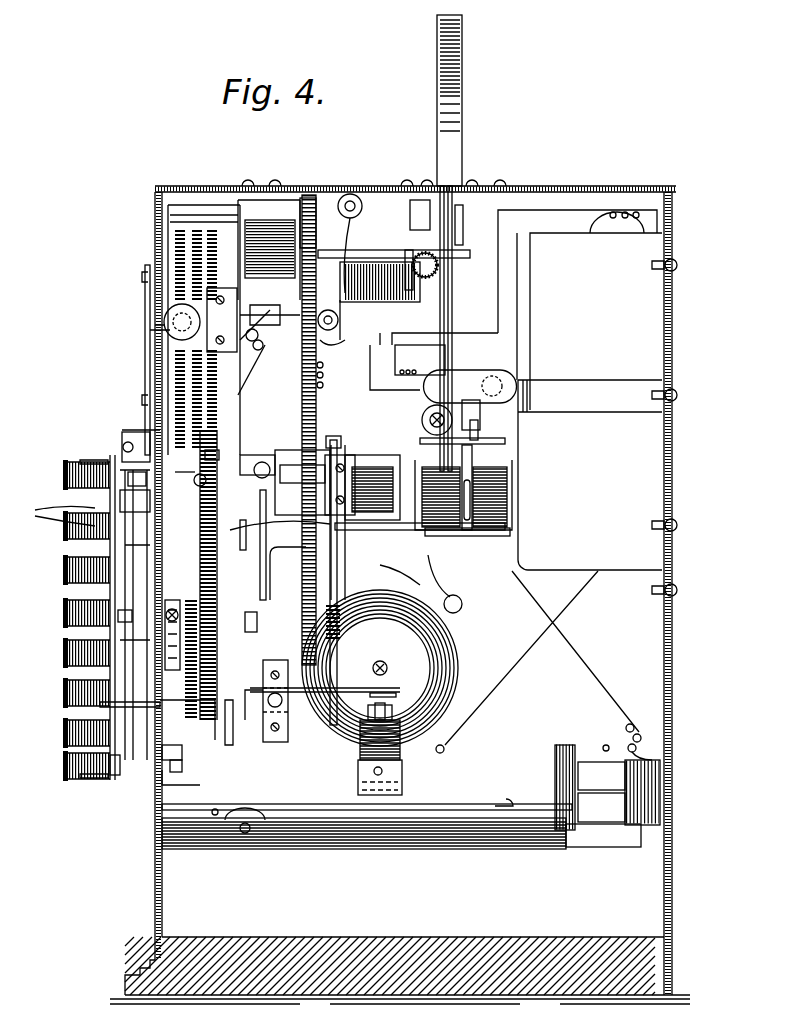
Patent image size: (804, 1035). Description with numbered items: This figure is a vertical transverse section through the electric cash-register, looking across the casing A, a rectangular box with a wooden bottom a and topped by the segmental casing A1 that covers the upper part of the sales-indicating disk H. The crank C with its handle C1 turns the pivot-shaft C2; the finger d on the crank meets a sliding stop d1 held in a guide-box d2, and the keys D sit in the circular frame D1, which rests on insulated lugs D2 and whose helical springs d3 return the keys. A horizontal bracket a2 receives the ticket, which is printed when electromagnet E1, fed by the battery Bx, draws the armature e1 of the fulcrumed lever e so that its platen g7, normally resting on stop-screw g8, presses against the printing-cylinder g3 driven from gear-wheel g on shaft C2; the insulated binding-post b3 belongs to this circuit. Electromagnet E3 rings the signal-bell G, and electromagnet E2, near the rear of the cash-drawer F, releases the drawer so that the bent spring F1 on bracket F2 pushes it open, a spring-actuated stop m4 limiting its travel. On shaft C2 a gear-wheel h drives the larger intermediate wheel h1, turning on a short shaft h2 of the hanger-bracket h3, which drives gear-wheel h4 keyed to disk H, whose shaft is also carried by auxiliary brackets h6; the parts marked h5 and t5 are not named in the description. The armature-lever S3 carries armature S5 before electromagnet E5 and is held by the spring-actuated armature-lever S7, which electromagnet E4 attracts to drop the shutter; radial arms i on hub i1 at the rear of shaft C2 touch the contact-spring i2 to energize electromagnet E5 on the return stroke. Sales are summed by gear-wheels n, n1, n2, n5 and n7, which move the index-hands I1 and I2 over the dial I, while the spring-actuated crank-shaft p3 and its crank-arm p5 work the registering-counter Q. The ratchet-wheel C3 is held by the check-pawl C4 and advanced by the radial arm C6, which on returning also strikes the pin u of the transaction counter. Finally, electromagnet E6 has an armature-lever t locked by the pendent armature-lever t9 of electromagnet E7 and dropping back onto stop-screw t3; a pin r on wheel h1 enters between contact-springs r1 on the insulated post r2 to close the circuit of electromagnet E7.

The exterior casing A is at (340, 178).
The bottom a is at (400, 970).
The segmental casing A1 is at (462, 92).
The electric battery Bx is at (527, 390).
The spring-actuated armature-lever S7 is at (505, 460).
The signal-bell G is at (380, 668).
The electromagnet E1 is at (402, 768).
The armature-lever e is at (218, 756).
The armature e1 is at (396, 695).
The ratchet-wheel C3 is at (262, 742).
The radial arms i is at (337, 580).
The disk-shaped hub i1 is at (345, 625).
The oscillating contact-spring i2 is at (396, 576).
The gear-wheel h is at (292, 572).
The spring-actuated keys D is at (63, 765).
The circular frame D1 is at (116, 781).
The helical springs d3 is at (86, 781).
The handle C1 is at (50, 515).
The horizontal bracket a2 is at (110, 706).
The crank C is at (133, 562).
The pivot-shaft C2 is at (350, 616).
The lugs D2 is at (135, 501).
The finger d is at (139, 480).
The sliding stop d1 is at (136, 446).
The guide-box d2 is at (136, 419).
The graduated dial I is at (148, 388).
The index-hand I2 is at (130, 282).
The index-hand I1 is at (129, 399).
The registering-counter Q is at (165, 330).
The gear-wheel n7 is at (173, 470).
The gear-wheel n5 is at (194, 470).
The gear-wheel n2 is at (218, 408).
The intermediate gear-wheel n1 is at (225, 445).
The gear-wheel n is at (218, 665).
The crank-shaft p3 is at (222, 320).
The crank-arm p5 is at (182, 322).
The electromagnet E6 is at (262, 240).
The gear-wheel h4 is at (310, 195).
The electromagnet E7 is at (413, 190).
The armature-lever t9 is at (358, 243).
The hanger-bracket h3 is at (329, 250).
The arm h5 is at (480, 255).
The auxiliary brackets h6 is at (486, 233).
The sales-indicating disk H is at (452, 310).
The contact-springs r1 is at (340, 311).
The pin r is at (346, 344).
The armature-lever t is at (270, 304).
The stop-screw t3 is at (260, 333).
The insulated post r2 is at (263, 350).
The short shaft h2 is at (263, 370).
The intermediate gear-wheel h1 is at (367, 524).
The post t5 is at (252, 533).
The pin u is at (291, 482).
The check-pawl C4 is at (255, 465).
The radial arm C6 is at (283, 545).
The electromagnet E3 is at (395, 445).
The electromagnet E4 is at (508, 495).
The armature S5 is at (482, 430).
The electromagnet E5 is at (460, 380).
The armature-lever S3 is at (407, 361).
The gear-wheel g is at (200, 560).
The printing-cylinder g3 is at (172, 609).
The platen g7 is at (160, 720).
The stop-screw g8 is at (180, 772).
The binding-post b3 is at (190, 487).
The cash-drawer F is at (401, 832).
The bent spring F1 is at (570, 775).
The spring-actuated stop m4 is at (513, 795).
The electromagnet E2 is at (607, 787).
The bracket F2 is at (601, 807).